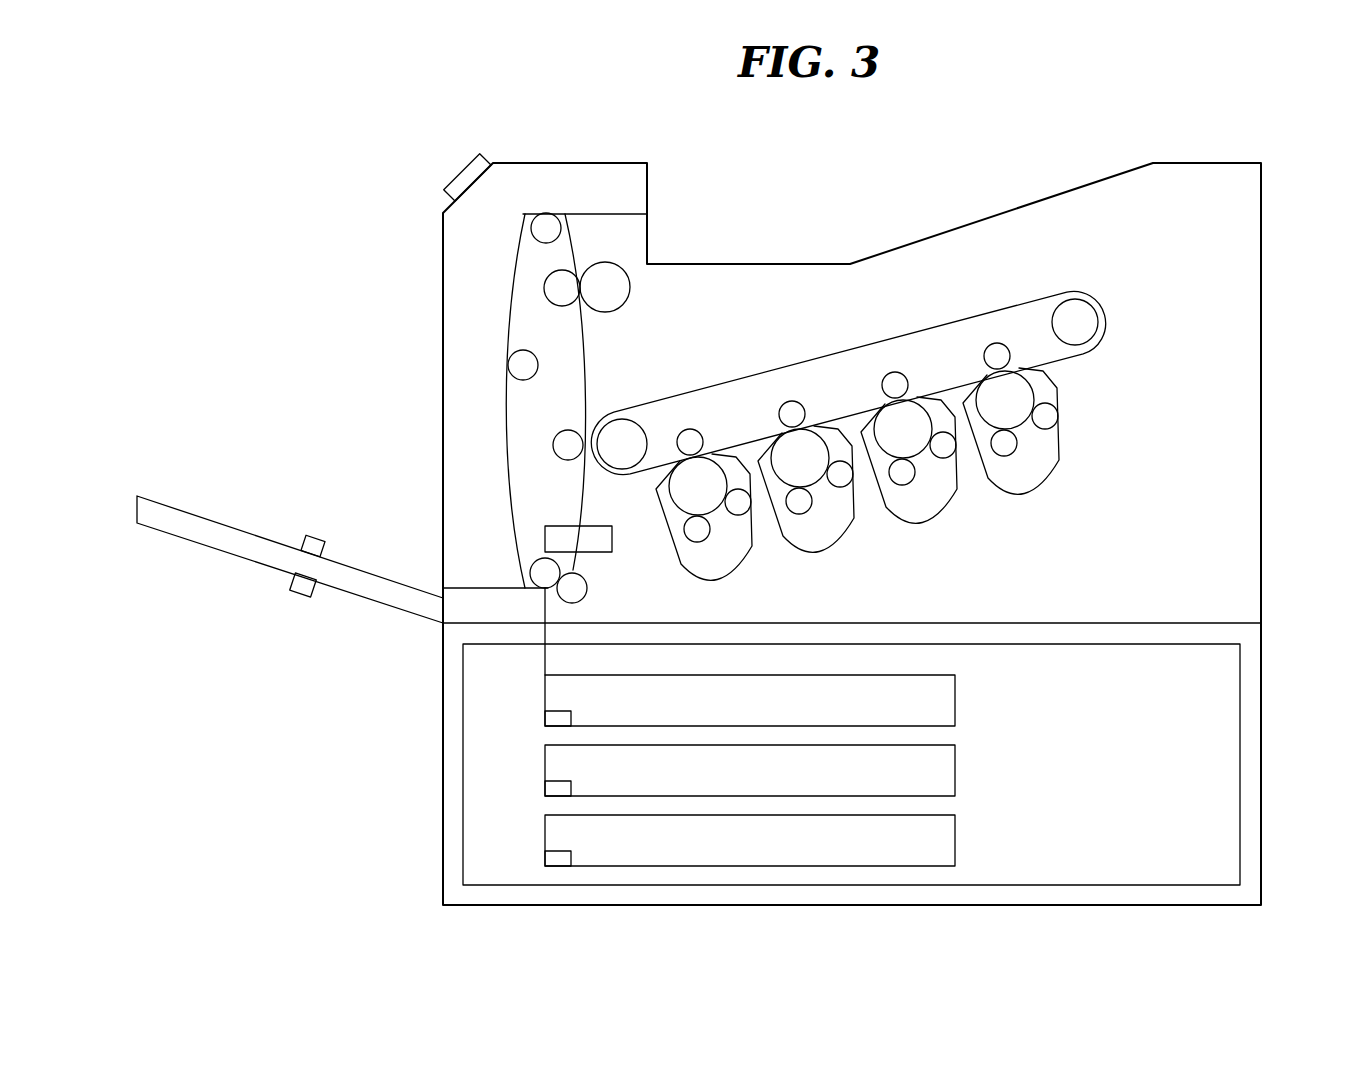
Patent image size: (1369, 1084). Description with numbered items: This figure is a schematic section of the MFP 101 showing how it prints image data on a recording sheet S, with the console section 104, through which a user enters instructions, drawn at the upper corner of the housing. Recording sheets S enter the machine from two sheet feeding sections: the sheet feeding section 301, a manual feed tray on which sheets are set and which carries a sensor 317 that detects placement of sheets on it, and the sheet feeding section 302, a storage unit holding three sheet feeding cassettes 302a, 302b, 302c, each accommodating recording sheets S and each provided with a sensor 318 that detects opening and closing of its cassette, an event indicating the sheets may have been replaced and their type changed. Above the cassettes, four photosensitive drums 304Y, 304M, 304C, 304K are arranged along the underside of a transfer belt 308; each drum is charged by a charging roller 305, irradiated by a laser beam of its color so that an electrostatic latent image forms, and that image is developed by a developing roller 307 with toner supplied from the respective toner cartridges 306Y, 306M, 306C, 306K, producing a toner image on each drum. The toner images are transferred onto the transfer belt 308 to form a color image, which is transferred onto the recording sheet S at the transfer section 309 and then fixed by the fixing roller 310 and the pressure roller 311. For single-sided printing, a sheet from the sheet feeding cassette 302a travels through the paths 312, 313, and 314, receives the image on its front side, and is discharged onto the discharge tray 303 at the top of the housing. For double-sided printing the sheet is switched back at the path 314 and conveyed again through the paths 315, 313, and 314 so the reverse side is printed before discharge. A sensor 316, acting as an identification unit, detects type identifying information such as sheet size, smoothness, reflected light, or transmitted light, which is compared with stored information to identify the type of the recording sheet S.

The MFP 101 is at (1227, 958).
The console section 104 is at (460, 178).
The sheet feeding section 301 is at (217, 520).
The sheet feeding section 302 is at (1261, 768).
The sheet feeding cassette 302a is at (957, 702).
The sheet feeding cassette 302b is at (957, 770).
The sheet feeding cassette 302c is at (957, 840).
The discharge tray 303 is at (725, 263).
The photosensitive drum 304K is at (718, 450).
The photosensitive drum 304C is at (817, 420).
The photosensitive drum 304M is at (916, 390).
The photosensitive drum 304Y is at (1023, 377).
The charging roller 305 is at (688, 543).
The toner cartridge 306K is at (737, 572).
The toner cartridge 306C is at (839, 555).
The toner cartridge 306M is at (935, 518).
The toner cartridge 306Y is at (1038, 494).
The developing roller 307 is at (731, 516).
The transfer belt 308 is at (1107, 317).
The transfer section 309 is at (567, 430).
The fixing roller 310 is at (602, 260).
The pressure roller 311 is at (557, 307).
The path 312 is at (542, 662).
The path 313 is at (587, 369).
The path 314 is at (588, 212).
The path 315 is at (507, 398).
The sensor 316 is at (565, 525).
The sensor 317 is at (318, 536).
The sensor 318 is at (572, 717).
The recording sheet S is at (957, 680).